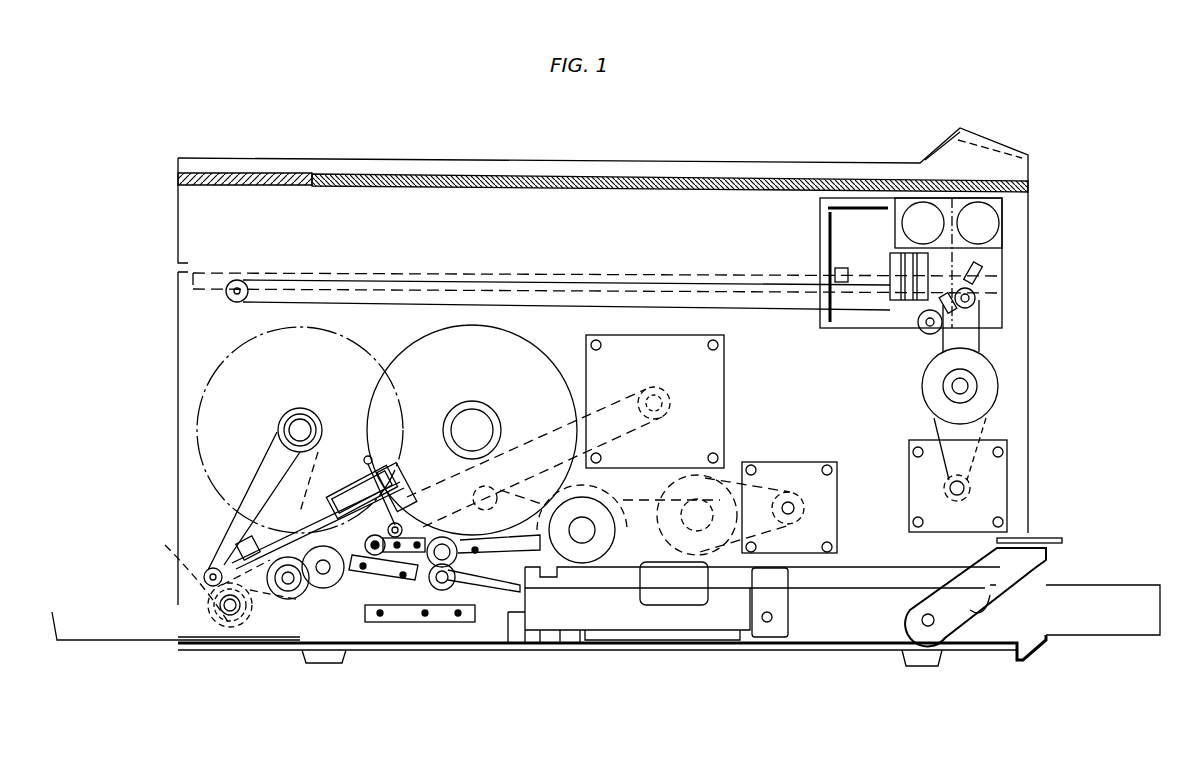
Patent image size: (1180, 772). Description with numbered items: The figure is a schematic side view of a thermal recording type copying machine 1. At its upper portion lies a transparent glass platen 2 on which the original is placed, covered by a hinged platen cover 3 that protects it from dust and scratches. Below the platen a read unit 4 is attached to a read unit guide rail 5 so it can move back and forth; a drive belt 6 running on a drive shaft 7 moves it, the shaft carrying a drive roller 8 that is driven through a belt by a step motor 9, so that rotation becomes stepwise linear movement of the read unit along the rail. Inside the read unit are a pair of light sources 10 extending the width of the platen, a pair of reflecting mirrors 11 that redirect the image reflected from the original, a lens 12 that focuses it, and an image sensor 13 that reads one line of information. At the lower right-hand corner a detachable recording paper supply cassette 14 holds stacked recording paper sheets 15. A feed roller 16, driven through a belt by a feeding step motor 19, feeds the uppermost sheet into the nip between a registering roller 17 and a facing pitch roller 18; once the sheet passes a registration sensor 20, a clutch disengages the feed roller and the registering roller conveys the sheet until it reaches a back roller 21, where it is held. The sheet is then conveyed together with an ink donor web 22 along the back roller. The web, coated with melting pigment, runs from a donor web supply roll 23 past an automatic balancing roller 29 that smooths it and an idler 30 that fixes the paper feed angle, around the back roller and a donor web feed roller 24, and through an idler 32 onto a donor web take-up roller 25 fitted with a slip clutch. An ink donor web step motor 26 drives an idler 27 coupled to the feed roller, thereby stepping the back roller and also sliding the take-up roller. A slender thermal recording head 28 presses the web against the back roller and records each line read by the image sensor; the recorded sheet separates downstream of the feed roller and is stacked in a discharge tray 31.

The copying machine 1 is at (994, 136).
The platen 2 is at (441, 175).
The platen cover 3 is at (942, 148).
The read unit 4 is at (1005, 252).
The read unit guide rail 5 is at (1008, 292).
The drive belt 6 is at (985, 340).
The drive shaft 7 is at (980, 393).
The drive roller 8 is at (995, 372).
The step motor 9 is at (1007, 478).
The light sources 10 is at (995, 215).
The reflecting mirrors 11 is at (978, 315).
The lens 12 is at (897, 302).
The image sensor 13 is at (838, 272).
The recording paper supply cassette 14 is at (1080, 585).
The recording paper sheets 15 is at (633, 580).
The feed roller 16 is at (606, 572).
The registering roller 17 is at (478, 556).
The pitch roller 18 is at (442, 592).
The feeding step motor 19 is at (808, 556).
The registration sensor 20 is at (420, 583).
The back roller 21 is at (325, 590).
The ink donor web 22 is at (378, 558).
The donor web supply roll 23 is at (548, 365).
The donor web feed roller 24 is at (290, 600).
The donor web take-up roller 25 is at (255, 345).
The ink donor web step motor 26 is at (725, 382).
The idler 27 is at (226, 614).
The thermal recording head 28 is at (287, 525).
The automatic balancing roller 29 is at (400, 502).
The idler 30 is at (320, 502).
The discharge tray 31 is at (101, 638).
The idler 32 is at (205, 572).